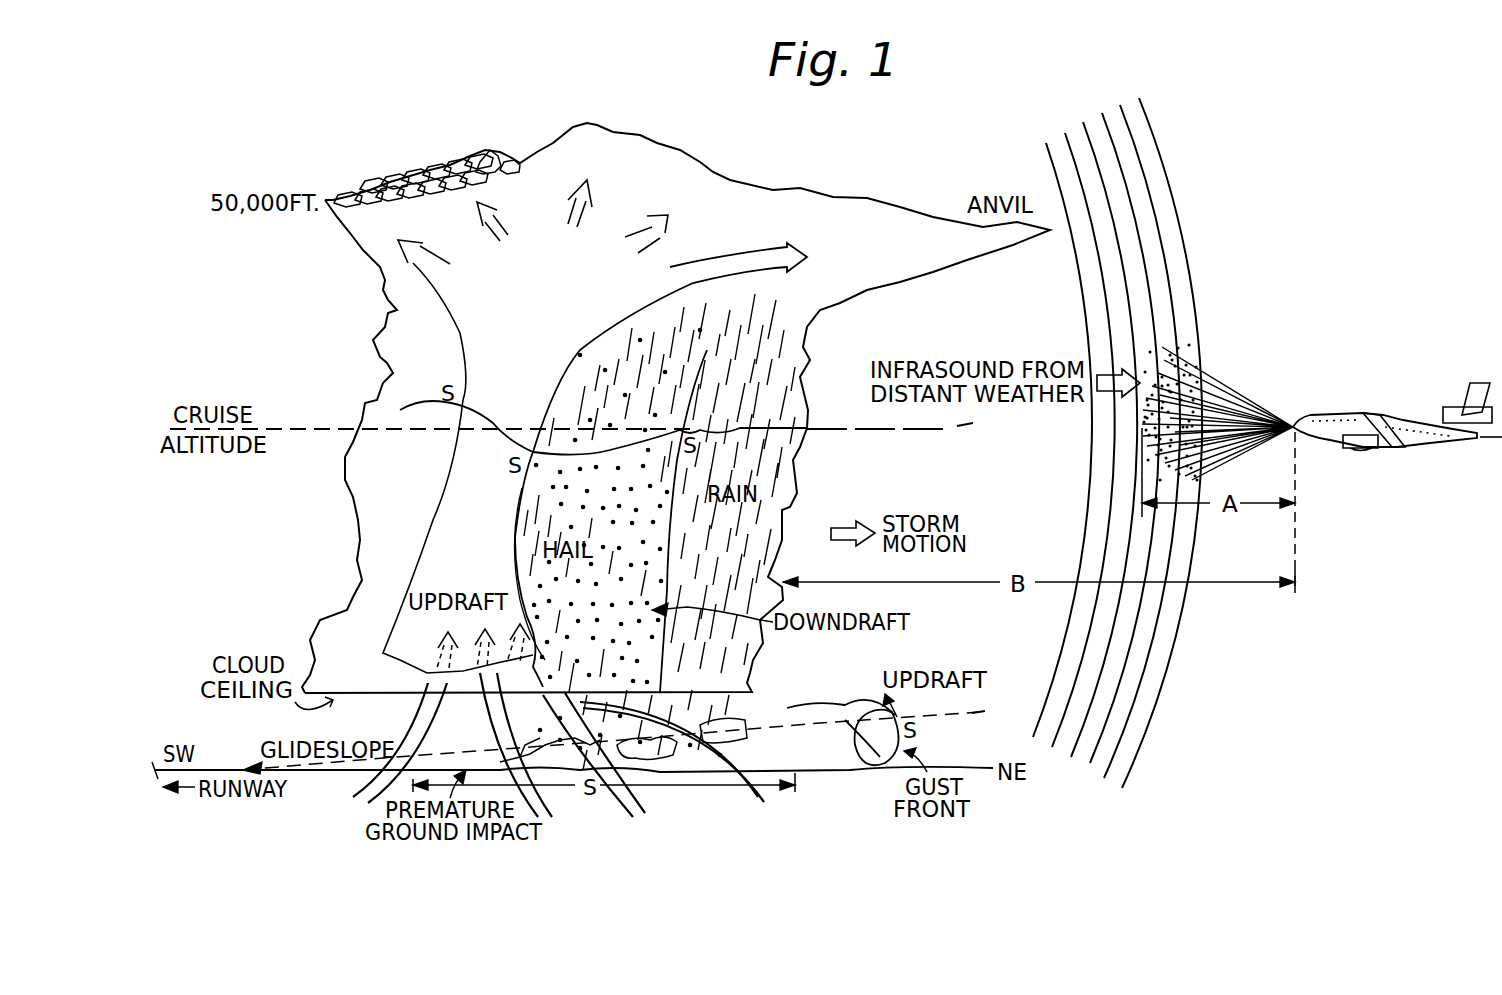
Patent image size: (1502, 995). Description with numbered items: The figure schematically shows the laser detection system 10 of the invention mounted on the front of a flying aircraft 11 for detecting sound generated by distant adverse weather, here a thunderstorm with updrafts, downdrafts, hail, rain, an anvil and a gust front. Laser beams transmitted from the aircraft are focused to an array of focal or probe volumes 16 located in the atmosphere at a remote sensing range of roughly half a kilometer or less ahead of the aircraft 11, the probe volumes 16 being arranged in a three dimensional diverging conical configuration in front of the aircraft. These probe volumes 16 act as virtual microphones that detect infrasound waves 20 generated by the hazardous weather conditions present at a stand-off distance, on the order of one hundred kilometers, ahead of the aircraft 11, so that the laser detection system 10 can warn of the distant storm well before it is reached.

The laser detection system 10 is at (1382, 403).
The aircraft 11 is at (1405, 417).
The probe volumes 16 is at (1168, 342).
The infrasound waves 20 is at (1108, 495).